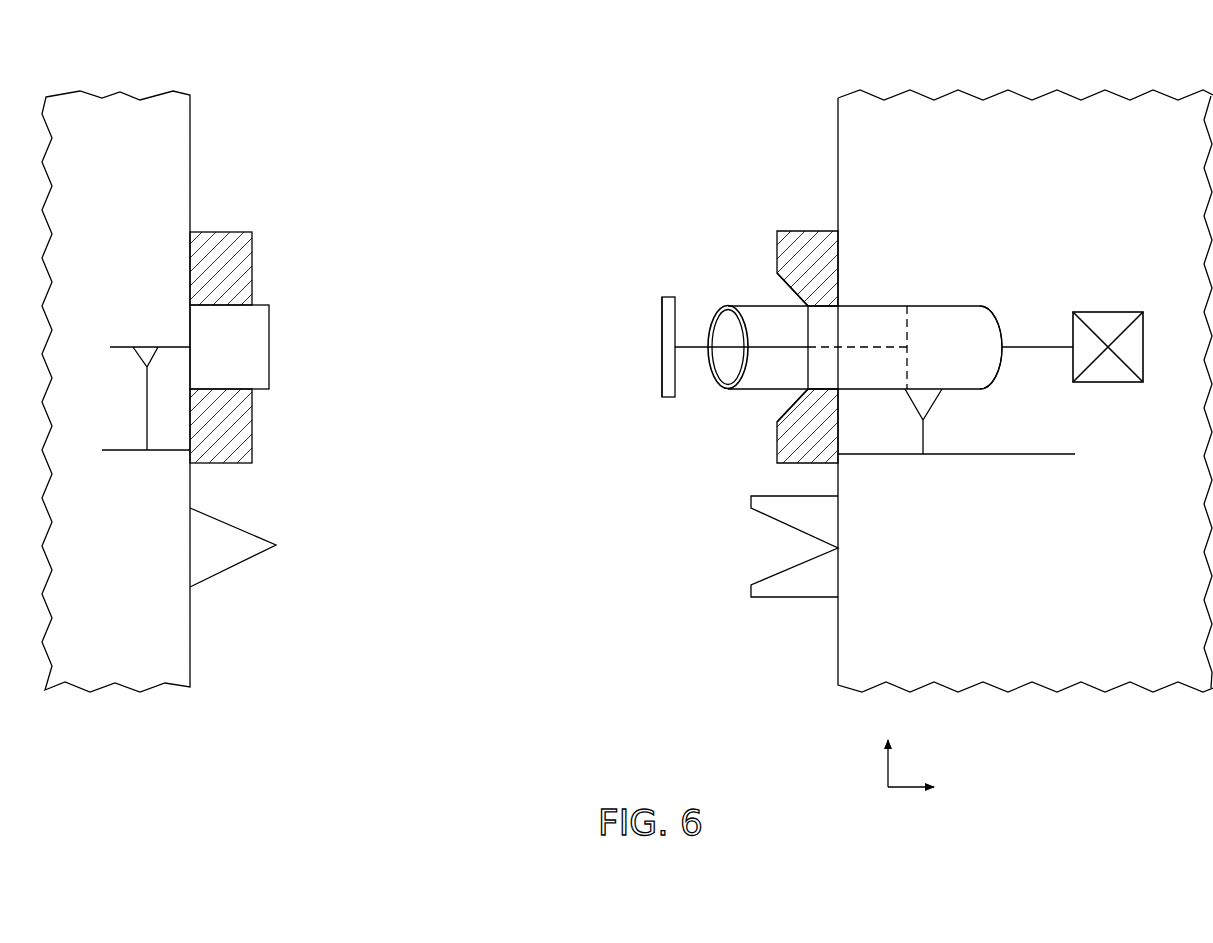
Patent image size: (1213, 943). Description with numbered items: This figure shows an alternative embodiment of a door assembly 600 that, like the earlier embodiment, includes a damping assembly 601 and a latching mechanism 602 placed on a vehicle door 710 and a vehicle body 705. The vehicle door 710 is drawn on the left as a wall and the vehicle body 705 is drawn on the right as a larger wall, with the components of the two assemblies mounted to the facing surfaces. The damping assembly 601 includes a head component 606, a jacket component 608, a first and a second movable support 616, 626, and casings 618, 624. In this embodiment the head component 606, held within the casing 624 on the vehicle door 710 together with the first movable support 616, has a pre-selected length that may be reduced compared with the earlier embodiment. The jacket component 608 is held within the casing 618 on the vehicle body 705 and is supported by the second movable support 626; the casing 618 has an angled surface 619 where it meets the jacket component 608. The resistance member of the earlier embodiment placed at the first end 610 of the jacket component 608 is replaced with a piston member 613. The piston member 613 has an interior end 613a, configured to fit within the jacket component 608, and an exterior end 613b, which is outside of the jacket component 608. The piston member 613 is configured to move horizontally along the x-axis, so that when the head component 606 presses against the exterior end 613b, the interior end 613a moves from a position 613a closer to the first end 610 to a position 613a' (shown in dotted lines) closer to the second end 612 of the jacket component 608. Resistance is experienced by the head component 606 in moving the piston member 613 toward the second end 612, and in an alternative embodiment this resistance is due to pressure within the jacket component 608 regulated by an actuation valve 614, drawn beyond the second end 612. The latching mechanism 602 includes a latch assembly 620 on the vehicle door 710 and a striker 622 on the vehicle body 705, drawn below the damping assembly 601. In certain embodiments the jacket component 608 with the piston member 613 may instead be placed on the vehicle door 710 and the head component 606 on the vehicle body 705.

The door assembly 600 is at (645, 108).
The damping assembly 601 is at (514, 309).
The latching mechanism 602 is at (514, 601).
The head component 606 is at (269, 352).
The jacket component 608 is at (893, 306).
The first end 610 is at (733, 306).
The second end 612 is at (982, 306).
The piston member 613 is at (662, 342).
The interior end 613a is at (857, 366).
The position of interior end 613a' is at (946, 347).
The exterior end 613b is at (676, 386).
The actuation valve 614 is at (1108, 312).
The first movable support 616 is at (147, 400).
The casing 618 is at (797, 231).
The chamfered surface 619 is at (780, 292).
The latch assembly 620 is at (238, 562).
The striker 622 is at (782, 598).
The casing 624 is at (230, 232).
The second movable support 626 is at (926, 438).
The vehicle body 705 is at (960, 110).
The vehicle door 710 is at (130, 110).